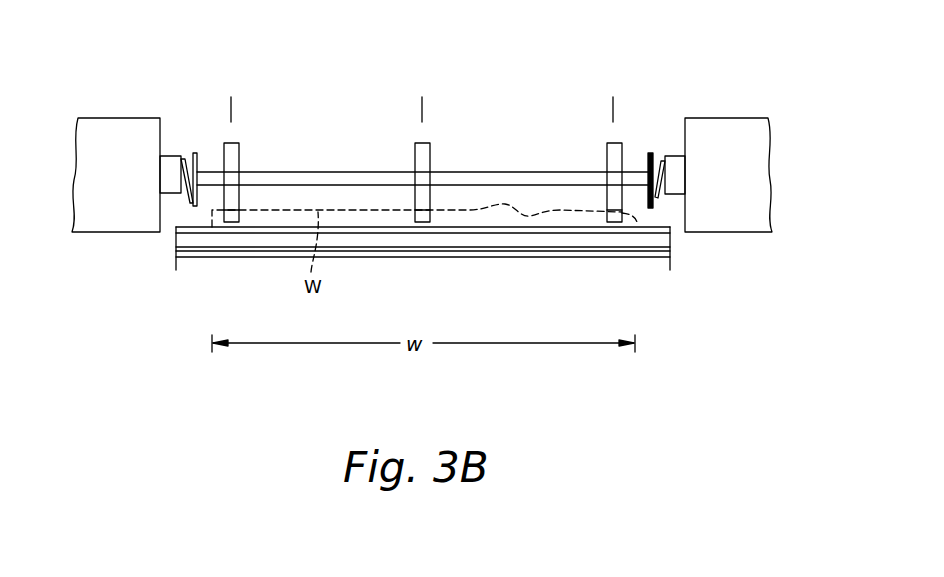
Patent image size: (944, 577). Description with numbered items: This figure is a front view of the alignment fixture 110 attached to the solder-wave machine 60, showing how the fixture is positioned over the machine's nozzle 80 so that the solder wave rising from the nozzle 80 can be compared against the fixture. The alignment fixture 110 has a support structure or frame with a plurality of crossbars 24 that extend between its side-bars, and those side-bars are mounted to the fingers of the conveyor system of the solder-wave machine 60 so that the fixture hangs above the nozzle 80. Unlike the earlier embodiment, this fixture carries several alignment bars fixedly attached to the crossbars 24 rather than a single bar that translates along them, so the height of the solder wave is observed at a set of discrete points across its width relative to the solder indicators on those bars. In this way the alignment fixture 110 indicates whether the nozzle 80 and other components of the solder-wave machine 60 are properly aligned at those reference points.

The crossbars 24 is at (522, 180).
The solder-wave machine 60 is at (694, 245).
The nozzle 80 is at (177, 231).
The alignment fixture 110 is at (435, 133).